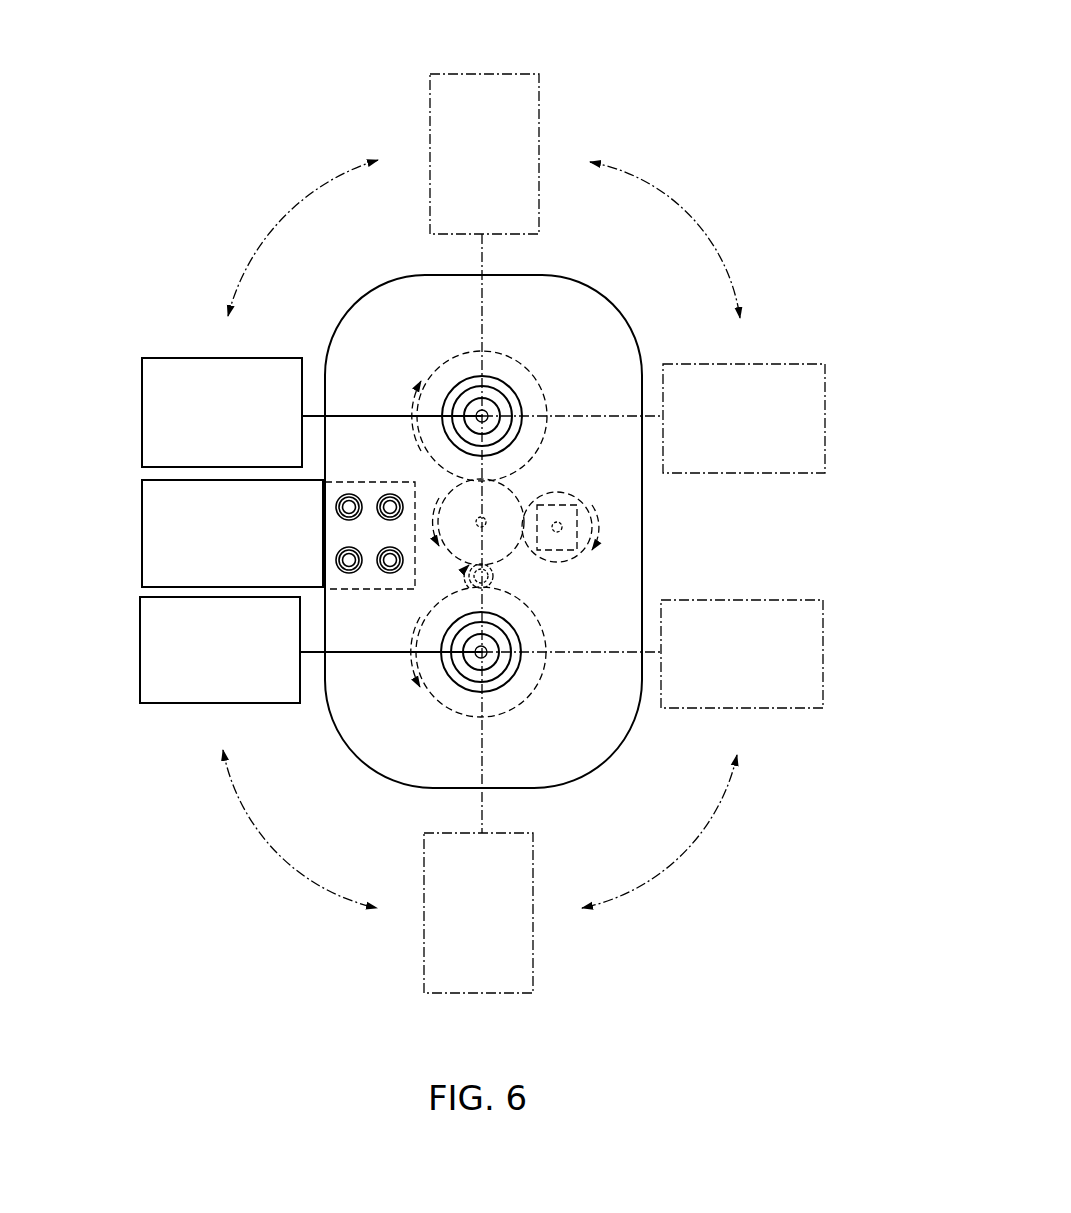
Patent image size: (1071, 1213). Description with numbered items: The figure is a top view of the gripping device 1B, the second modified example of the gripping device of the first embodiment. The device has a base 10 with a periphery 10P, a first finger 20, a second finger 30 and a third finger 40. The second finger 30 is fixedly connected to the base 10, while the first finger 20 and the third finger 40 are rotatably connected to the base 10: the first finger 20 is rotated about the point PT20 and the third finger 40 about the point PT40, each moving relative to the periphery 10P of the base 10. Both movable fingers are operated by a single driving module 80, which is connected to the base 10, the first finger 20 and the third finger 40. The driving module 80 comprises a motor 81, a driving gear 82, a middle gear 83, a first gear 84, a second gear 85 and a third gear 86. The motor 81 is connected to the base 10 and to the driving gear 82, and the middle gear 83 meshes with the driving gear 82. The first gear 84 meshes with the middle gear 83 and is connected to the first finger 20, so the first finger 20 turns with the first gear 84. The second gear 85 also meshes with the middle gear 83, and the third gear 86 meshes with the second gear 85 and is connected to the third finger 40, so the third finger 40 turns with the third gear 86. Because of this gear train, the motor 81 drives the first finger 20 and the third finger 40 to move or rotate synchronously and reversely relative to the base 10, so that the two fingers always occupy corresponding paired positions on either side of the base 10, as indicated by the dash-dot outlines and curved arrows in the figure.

The gripping device 1B is at (743, 125).
The base 10 is at (340, 340).
The periphery of the base 10P is at (583, 297).
The first finger 20 is at (142, 400).
The second finger 30 is at (142, 527).
The third finger 40 is at (140, 652).
The driving module 80 is at (215, 36).
The motor 81 is at (558, 500).
The driving gear 82 is at (563, 561).
The middle gear 83 is at (517, 492).
The first gear 84 is at (548, 407).
The second gear 85 is at (490, 585).
The third gear 86 is at (425, 620).
The point PT20 is at (486, 411).
The point PT40 is at (485, 657).